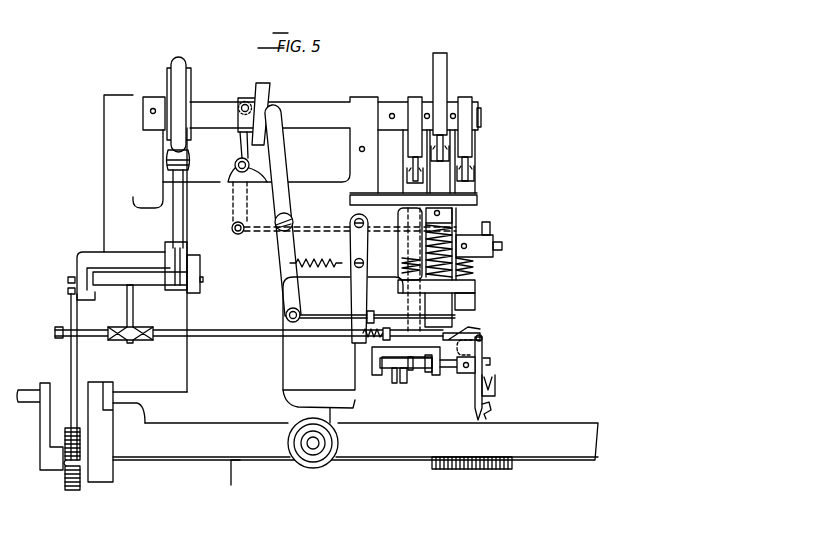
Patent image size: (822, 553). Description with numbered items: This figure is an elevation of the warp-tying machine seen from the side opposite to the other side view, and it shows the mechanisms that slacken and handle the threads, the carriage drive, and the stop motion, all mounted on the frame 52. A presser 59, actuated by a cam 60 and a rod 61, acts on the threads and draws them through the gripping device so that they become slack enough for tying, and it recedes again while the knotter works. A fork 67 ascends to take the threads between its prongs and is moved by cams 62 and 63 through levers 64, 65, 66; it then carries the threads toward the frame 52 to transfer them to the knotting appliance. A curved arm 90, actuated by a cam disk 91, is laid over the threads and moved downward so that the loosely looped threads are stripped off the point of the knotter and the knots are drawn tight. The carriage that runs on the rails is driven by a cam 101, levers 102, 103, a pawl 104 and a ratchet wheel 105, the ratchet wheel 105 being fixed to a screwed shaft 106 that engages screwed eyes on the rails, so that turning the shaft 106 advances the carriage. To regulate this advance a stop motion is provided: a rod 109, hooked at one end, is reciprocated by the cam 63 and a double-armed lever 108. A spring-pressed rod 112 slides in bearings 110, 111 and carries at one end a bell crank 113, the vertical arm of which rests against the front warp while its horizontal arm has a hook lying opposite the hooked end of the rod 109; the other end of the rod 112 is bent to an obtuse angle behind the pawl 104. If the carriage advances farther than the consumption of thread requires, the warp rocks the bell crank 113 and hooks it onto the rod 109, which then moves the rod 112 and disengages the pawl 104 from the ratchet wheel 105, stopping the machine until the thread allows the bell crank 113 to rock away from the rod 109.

The frame 52 is at (279, 368).
The presser 59 is at (456, 225).
The cam 60 is at (444, 73).
The rod 61 is at (441, 171).
The cam 62 is at (470, 102).
The cam 63 is at (262, 126).
The lever 64 is at (242, 146).
The lever 65 is at (316, 227).
The lever 66 is at (478, 253).
The fork 67 is at (495, 390).
The curved arm 90 is at (489, 412).
The cam disk 91 is at (413, 96).
The cam 101 is at (190, 83).
The lever 102 is at (180, 262).
The lever 103 is at (72, 296).
The pawl 104 is at (76, 368).
The ratchet wheel 105 is at (72, 491).
The screwed shaft 106 is at (159, 463).
The double-armed lever 108 is at (283, 170).
The rod 109 is at (326, 310).
The bearing 110 is at (366, 303).
The bearing 111 is at (134, 308).
The spring-pressed rod 112 is at (172, 339).
The bell crank 113 is at (486, 338).